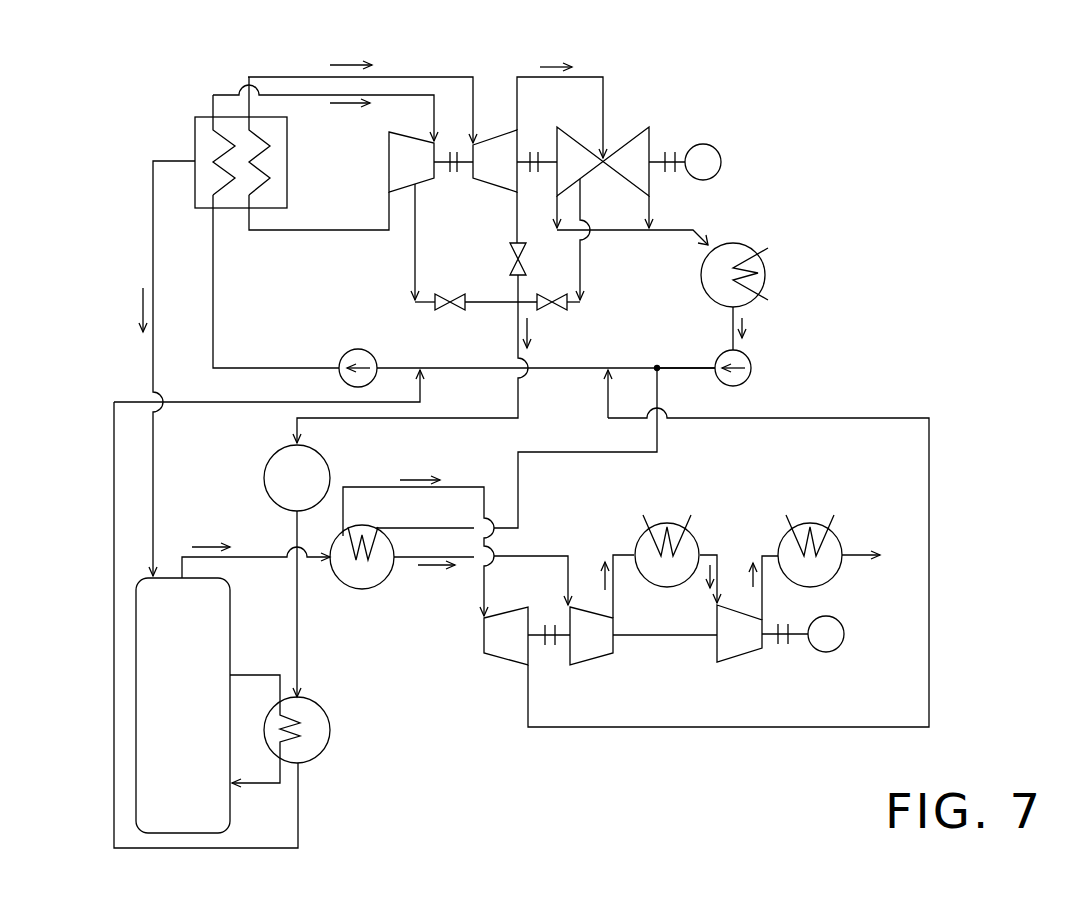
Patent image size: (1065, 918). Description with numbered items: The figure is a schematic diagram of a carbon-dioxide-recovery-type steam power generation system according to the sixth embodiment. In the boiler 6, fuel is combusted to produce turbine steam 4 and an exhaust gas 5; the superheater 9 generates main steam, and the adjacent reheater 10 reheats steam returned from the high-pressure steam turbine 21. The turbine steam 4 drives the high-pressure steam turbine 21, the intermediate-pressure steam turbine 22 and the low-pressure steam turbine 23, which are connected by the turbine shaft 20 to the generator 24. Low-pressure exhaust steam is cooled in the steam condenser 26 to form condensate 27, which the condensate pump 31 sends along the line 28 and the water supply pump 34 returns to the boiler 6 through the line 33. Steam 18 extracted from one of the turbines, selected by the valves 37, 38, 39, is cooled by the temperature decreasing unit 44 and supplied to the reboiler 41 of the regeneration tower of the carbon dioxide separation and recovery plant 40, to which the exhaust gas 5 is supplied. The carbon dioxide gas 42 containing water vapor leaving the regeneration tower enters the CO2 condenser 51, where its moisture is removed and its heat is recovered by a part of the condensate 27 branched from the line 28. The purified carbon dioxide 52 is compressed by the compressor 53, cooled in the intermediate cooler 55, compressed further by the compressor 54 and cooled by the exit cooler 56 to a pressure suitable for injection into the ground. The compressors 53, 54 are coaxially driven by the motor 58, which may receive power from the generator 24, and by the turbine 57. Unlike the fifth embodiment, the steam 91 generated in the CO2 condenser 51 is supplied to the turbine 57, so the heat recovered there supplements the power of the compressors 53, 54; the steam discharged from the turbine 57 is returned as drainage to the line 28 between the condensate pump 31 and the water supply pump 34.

The turbine steam 4 is at (352, 62).
The exhaust gas 5 is at (138, 310).
The boiler 6 is at (195, 128).
The superheater 9 is at (225, 172).
The reheater 10 is at (268, 172).
The steam 18 is at (532, 332).
The turbine shaft 20 is at (456, 168).
The high-pressure steam turbine 21 is at (389, 165).
The intermediate-pressure steam turbine 22 is at (497, 143).
The low-pressure steam turbine 23 is at (626, 140).
The generator 24 is at (722, 152).
The steam condenser 26 is at (701, 282).
The condensate 27 is at (742, 318).
The line 28 is at (574, 372).
The condensate pump 31 is at (752, 366).
The line 33 is at (265, 368).
The water supply pump 34 is at (356, 349).
The valve 37 is at (440, 310).
The valve 38 is at (510, 257).
The valve 39 is at (546, 294).
The carbon dioxide separation and recovery plant 40 is at (231, 619).
The reboiler 41 is at (316, 756).
The carbon dioxide gas 42 is at (208, 543).
The temperature decreasing unit 44 is at (276, 456).
The CO2 condenser 51 is at (366, 590).
The carbon dioxide 52 is at (435, 573).
The compressor 53 is at (588, 658).
The compressor 54 is at (735, 662).
The intermediate cooler 55 is at (656, 520).
The exit cooler 56 is at (805, 518).
The turbine 57 is at (496, 658).
The motor 58 is at (845, 632).
The steam 91 is at (428, 480).